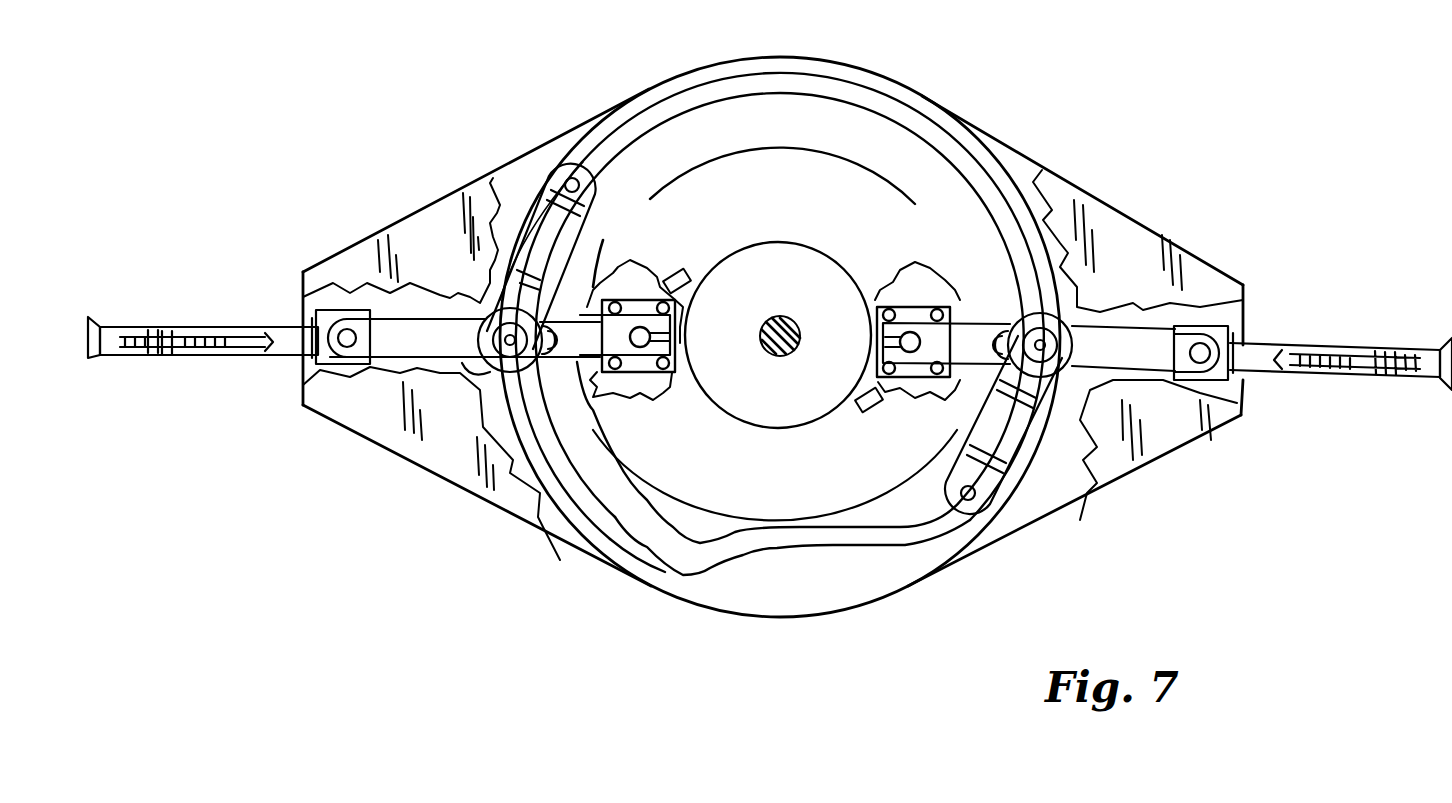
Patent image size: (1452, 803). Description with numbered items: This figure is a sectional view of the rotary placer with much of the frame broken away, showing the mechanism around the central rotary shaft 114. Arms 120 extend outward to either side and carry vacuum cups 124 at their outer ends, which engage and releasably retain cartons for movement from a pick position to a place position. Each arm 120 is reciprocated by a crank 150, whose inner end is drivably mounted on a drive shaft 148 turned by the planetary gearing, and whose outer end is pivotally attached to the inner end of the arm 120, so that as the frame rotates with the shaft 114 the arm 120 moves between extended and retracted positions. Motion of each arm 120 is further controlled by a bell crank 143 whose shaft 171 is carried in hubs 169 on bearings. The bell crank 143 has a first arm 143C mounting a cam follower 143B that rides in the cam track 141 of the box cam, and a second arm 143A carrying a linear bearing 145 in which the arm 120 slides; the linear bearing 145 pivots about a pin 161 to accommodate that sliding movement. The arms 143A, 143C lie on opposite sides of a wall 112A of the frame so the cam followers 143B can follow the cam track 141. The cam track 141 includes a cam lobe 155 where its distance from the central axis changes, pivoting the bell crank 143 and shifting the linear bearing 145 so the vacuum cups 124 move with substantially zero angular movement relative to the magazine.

The wall 112A is at (333, 257).
The rotary shaft 114 is at (781, 316).
The arm 120 is at (215, 326).
The vacuum cup 124 is at (94, 357).
The cam track 141 is at (608, 541).
The bell crank 143 is at (687, 282).
The second arm 143A is at (392, 370).
The cam follower 143B is at (572, 178).
The first arm 143C is at (540, 197).
The linear bearing 145 is at (316, 358).
The drive shaft 148 is at (641, 327).
The crank 150 is at (550, 360).
The cam lobe 155 is at (682, 568).
The pin 161 is at (346, 347).
The hub 169 is at (478, 334).
The shaft 171 is at (480, 376).